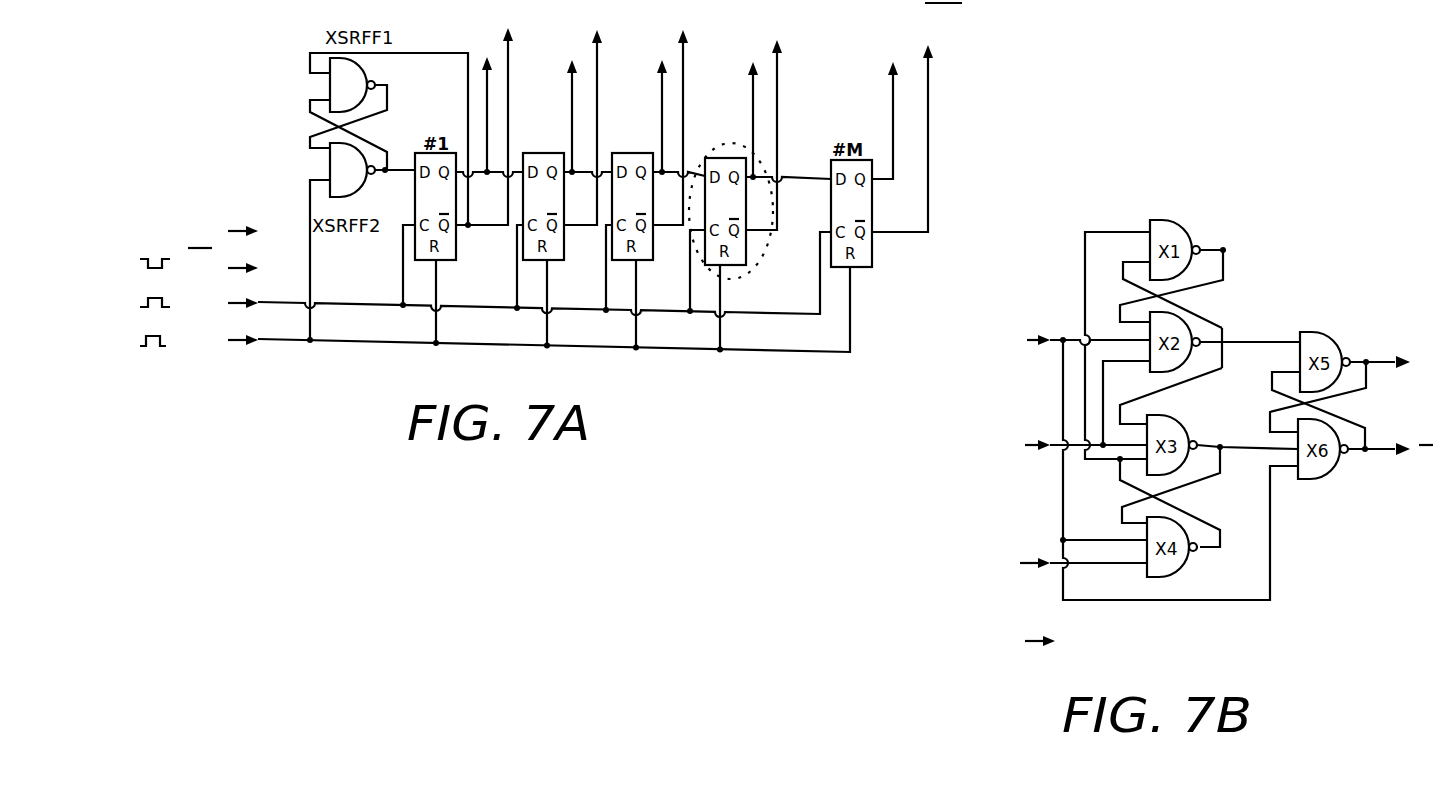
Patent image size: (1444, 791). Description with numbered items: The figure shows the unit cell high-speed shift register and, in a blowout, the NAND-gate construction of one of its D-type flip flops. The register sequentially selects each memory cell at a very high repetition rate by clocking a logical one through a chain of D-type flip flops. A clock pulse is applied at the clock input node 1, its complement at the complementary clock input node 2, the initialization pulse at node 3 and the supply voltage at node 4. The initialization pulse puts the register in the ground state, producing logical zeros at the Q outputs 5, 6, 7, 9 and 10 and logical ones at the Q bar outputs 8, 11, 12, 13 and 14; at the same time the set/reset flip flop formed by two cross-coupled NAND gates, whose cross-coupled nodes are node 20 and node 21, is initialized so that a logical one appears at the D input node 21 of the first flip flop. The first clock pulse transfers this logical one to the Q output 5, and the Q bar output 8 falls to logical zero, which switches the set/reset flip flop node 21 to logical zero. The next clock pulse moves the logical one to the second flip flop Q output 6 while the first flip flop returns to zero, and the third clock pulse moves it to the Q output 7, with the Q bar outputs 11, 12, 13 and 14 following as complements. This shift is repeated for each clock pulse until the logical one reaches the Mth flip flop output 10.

In FIG. 7A, the clock pulse input node 1 is at (485, 271).
In FIG. 7B, the clock pulse input node 1 is at (1057, 409).
In FIG. 7A, the complementary clock pulse input node 2 is at (199, 263).
In FIG. 7A, the initialization pulse input node 3 is at (503, 265).
In FIG. 7B, the initialization pulse input node 3 is at (1052, 555).
In FIG. 7A, the supply voltage node 4 is at (215, 223).
In FIG. 7B, the supply voltage node 4 is at (1014, 632).
In FIG. 7A, the Q output of the first flip flop 5 is at (470, 100).
In FIG. 7B, the Q output of the first flip flop 5 is at (1129, 457).
In FIG. 7A, the Q output of the second flip flop 6 is at (557, 102).
In FIG. 7B, the Q output of the second flip flop 6 is at (1352, 386).
In FIG. 7A, the Q output of the third flip flop 7 is at (645, 103).
In FIG. 7B, the Q output of the third flip flop 7 is at (1353, 420).
In FIG. 7A, the Q bar output of the first flip flop 8 is at (413, 128).
In FIG. 7B, the Q bar output of the first flip flop 8 is at (1163, 383).
In FIG. 7A, the Q output of the fourth flip flop 9 is at (736, 106).
In FIG. 7B, the Q output of the fourth flip flop 9 is at (1210, 473).
In FIG. 7A, the Q output of the Mth flip flop 10 is at (878, 107).
In FIG. 7B, the Q output of the Mth flip flop 10 is at (1210, 331).
In FIG. 7A, the Q bar output of the second flip flop 11 is at (595, 129).
In FIG. 7B, the Q bar output of the second flip flop 11 is at (1186, 276).
In FIG. 7A, the Q bar output of the third flip flop 12 is at (690, 131).
In FIG. 7A, the Q bar output of the fourth flip flop 13 is at (787, 135).
In FIG. 7A, the Q bar output of the Mth flip flop 14 is at (922, 117).
In FIG. 7A, the set/reset flip flop cross-coupled node 20 is at (350, 120).
In FIG. 7A, the D input node of the first flip flop 21 is at (350, 134).